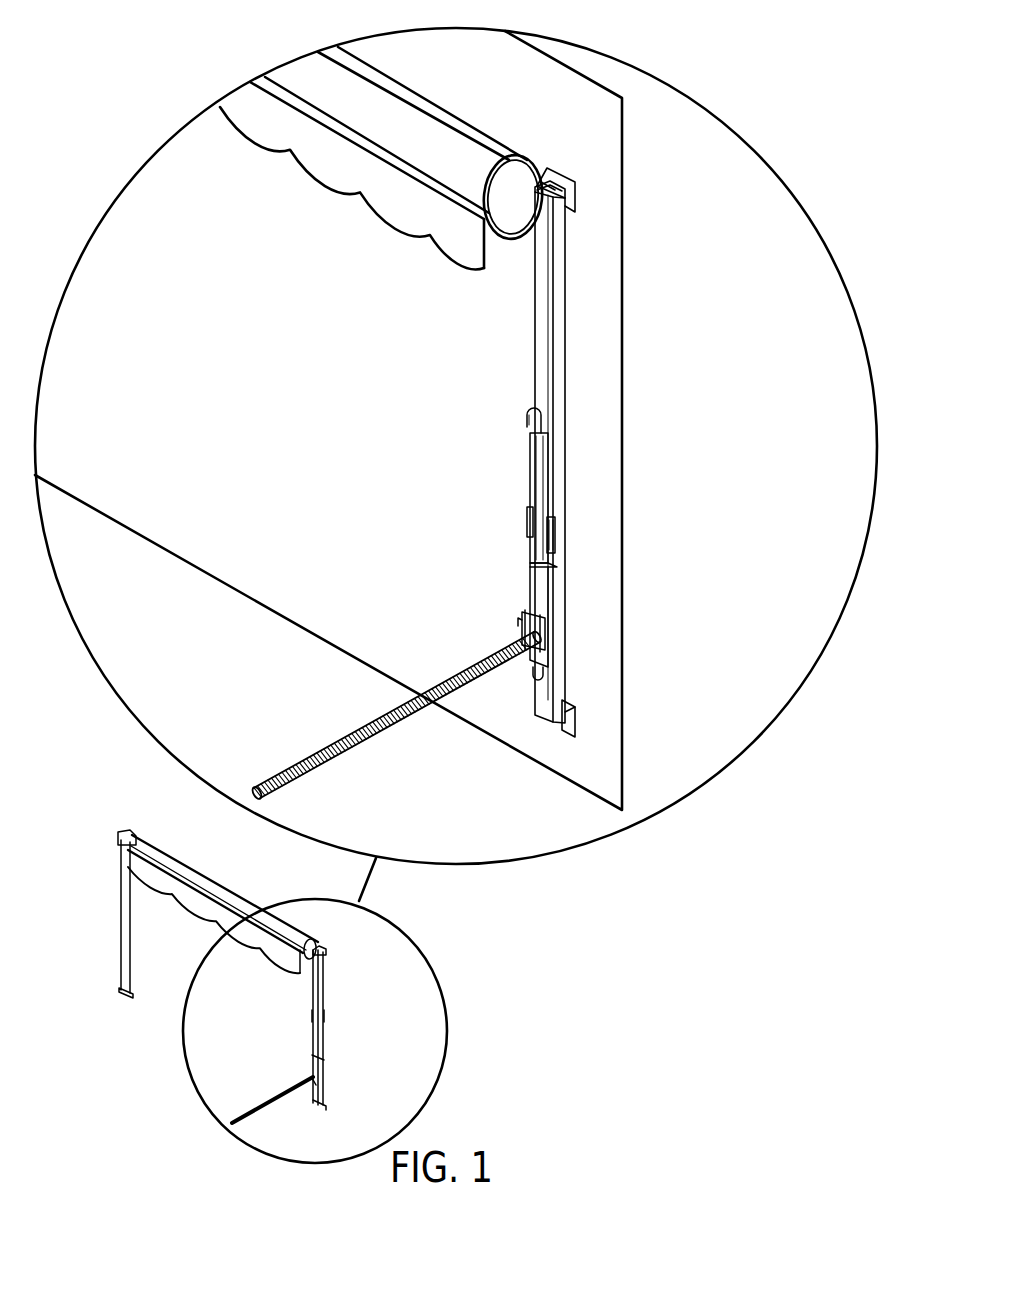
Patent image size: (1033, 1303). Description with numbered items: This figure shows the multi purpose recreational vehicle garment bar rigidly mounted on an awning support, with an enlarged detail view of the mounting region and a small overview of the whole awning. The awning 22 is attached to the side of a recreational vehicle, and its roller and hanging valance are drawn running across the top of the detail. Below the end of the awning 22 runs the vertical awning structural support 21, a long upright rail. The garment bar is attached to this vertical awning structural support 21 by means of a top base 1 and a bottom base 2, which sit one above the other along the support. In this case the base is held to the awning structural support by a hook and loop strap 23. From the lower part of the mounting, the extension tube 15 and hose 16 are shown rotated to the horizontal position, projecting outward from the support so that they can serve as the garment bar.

The top base 1 is at (620, 544).
The bottom base 2 is at (538, 460).
The extension tube 15 is at (393, 715).
The hose 16 is at (322, 753).
The vertical awning structural support 21 is at (545, 257).
The awning 22 is at (480, 162).
The hook and loop strap 23 is at (575, 562).